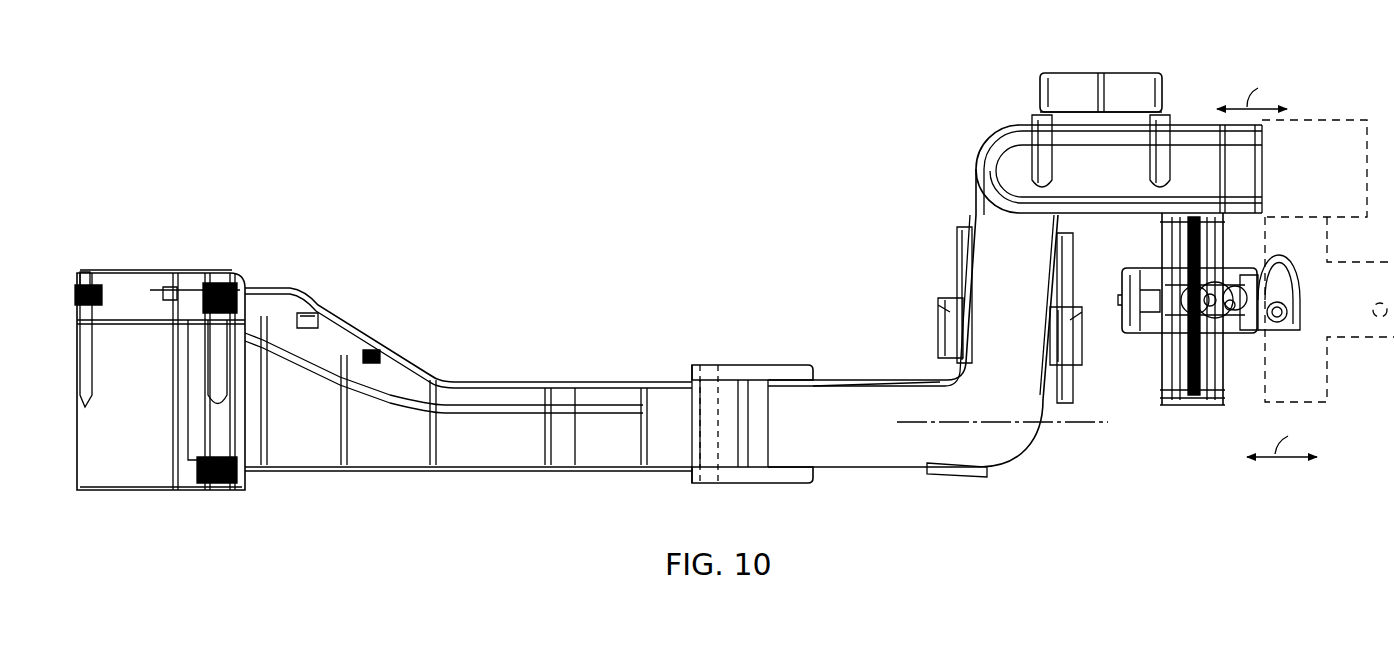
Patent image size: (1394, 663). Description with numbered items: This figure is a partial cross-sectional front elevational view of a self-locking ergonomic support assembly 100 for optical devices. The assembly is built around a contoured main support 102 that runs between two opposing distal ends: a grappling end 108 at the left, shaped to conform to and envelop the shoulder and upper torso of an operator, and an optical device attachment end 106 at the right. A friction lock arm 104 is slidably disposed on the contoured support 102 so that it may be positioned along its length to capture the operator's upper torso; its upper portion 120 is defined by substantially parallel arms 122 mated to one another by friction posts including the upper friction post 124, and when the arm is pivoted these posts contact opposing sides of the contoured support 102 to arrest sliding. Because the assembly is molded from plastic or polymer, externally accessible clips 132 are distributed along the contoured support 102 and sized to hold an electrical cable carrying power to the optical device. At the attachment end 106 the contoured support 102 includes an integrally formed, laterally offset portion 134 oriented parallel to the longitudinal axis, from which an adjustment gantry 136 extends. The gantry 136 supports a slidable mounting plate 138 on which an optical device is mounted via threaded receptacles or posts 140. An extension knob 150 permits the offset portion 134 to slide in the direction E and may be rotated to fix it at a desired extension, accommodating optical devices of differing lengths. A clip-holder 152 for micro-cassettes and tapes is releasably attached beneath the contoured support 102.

The ergonomic support assembly 100 is at (486, 321).
The contoured main support 102 is at (668, 380).
The friction lock arm 104 is at (843, 340).
The optical device attachment end 106 is at (970, 117).
The grappling end 108 is at (140, 256).
The upper portion 120 is at (684, 351).
The parallel arms 122 is at (735, 365).
The upper friction post 124 is at (698, 447).
The clips 132 is at (388, 312).
The laterally offset portion 134 is at (1187, 120).
The adjustment gantry 136 is at (1187, 407).
The slidable mounting plate 138 is at (1120, 317).
The threaded receptacles or posts 140 is at (1168, 288).
The extension knob 150 is at (1087, 73).
The clip-holder 152 is at (955, 266).